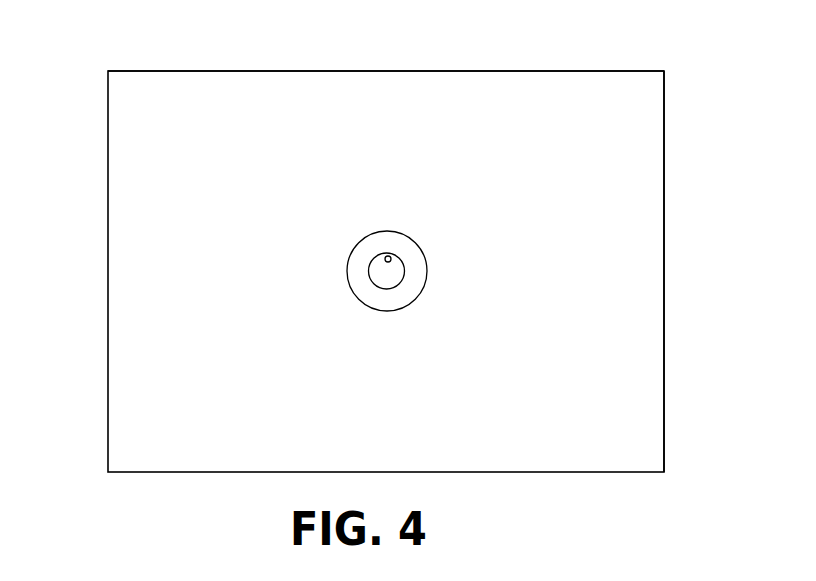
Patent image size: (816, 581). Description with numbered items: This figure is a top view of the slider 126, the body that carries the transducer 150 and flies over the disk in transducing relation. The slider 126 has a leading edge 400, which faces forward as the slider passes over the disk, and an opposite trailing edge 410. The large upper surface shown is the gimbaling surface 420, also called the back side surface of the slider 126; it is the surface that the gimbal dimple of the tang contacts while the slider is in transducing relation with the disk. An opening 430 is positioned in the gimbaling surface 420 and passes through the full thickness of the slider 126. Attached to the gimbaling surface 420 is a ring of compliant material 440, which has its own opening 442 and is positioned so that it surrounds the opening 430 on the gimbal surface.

The leading edge 400 is at (120, 167).
The gimbaling surface 420 is at (255, 85).
The slider 126 is at (558, 70).
The transducer 150 is at (664, 272).
The trailing edge 410 is at (664, 425).
The ring of compliant material 440 is at (427, 268).
The opening 430 is at (377, 273).
The opening 442 is at (388, 258).